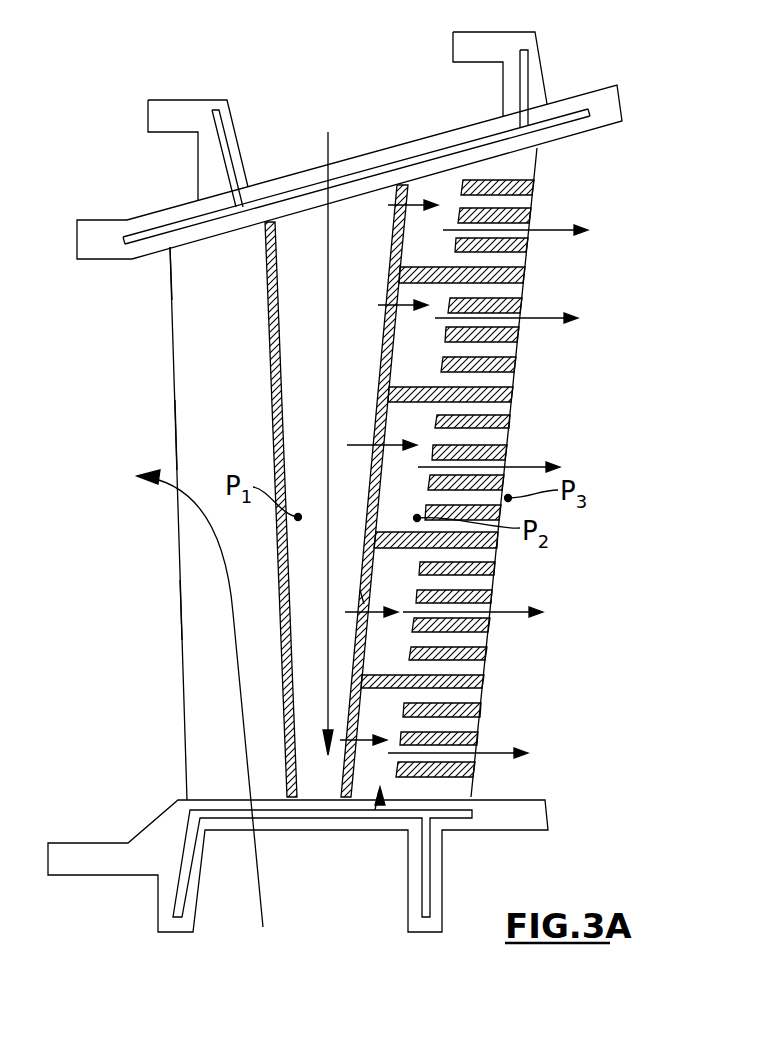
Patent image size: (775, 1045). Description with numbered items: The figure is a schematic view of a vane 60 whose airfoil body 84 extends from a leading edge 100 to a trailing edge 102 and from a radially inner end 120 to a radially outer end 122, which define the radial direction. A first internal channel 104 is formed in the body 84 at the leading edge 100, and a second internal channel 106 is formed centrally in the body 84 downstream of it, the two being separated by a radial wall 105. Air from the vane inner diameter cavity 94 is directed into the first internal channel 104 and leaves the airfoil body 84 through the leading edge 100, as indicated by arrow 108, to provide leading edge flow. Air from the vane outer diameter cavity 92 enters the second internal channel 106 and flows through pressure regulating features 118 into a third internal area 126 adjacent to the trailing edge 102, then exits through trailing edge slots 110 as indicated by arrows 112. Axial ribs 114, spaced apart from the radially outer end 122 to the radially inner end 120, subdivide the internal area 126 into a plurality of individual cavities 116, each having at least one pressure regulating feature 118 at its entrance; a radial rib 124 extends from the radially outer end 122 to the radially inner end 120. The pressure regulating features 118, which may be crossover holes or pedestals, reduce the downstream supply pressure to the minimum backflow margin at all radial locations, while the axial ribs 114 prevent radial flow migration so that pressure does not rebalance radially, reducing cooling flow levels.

The vane 60 is at (654, 96).
The airfoil body 84 is at (203, 440).
The vane outer diameter cavity 92 is at (482, 97).
The vane inner diameter cavity 94 is at (388, 890).
The leading edge 100 is at (175, 608).
The trailing edge 102 is at (485, 648).
The first internal channel 104 is at (193, 272).
The radial wall 105 is at (265, 253).
The second internal channel 106 is at (293, 240).
The arrow 108 is at (262, 893).
The slots 110 is at (525, 203).
The arrows 112 is at (328, 132).
The axial ribs 114 is at (428, 270).
The cavities 116 is at (525, 155).
The pressure regulating features 118 is at (397, 232).
The radially inner end 120 is at (207, 775).
The radially outer end 122 is at (168, 270).
The radial rib 124 is at (370, 597).
The internal area 126 is at (375, 810).